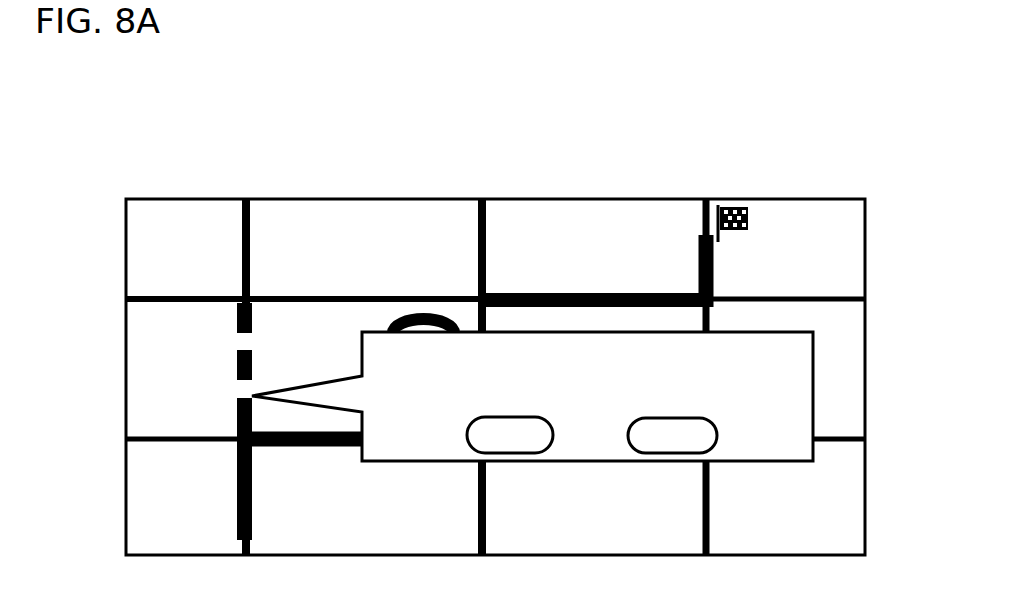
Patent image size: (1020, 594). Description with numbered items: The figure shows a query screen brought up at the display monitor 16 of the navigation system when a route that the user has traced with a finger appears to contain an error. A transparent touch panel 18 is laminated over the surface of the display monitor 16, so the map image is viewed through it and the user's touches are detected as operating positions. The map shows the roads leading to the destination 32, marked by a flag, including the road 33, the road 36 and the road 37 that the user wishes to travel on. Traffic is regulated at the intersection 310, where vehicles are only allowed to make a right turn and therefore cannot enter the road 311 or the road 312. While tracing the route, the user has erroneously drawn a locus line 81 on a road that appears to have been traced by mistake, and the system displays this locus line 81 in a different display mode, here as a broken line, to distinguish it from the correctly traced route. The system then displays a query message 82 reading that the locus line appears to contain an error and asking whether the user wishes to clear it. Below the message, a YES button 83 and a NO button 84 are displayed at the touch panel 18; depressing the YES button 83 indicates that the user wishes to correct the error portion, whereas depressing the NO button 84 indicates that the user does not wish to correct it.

The display monitor 16 is at (495, 331).
The touch panel 18 is at (683, 199).
The destination 32 is at (738, 201).
The road 33 is at (252, 477).
The road 36 is at (628, 293).
The road 37 is at (715, 272).
The locus line 81 is at (237, 376).
The query message 82 is at (817, 340).
The YES button 83 is at (520, 453).
The NO button 84 is at (678, 453).
The intersection 310 is at (497, 290).
The road 311 is at (486, 222).
The road 312 is at (350, 297).